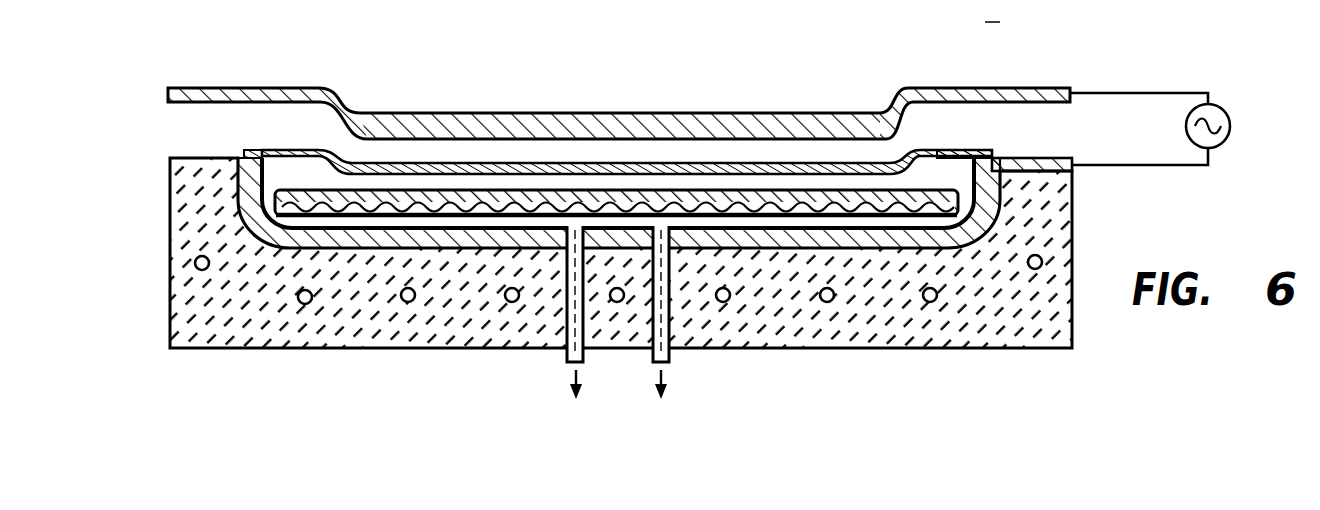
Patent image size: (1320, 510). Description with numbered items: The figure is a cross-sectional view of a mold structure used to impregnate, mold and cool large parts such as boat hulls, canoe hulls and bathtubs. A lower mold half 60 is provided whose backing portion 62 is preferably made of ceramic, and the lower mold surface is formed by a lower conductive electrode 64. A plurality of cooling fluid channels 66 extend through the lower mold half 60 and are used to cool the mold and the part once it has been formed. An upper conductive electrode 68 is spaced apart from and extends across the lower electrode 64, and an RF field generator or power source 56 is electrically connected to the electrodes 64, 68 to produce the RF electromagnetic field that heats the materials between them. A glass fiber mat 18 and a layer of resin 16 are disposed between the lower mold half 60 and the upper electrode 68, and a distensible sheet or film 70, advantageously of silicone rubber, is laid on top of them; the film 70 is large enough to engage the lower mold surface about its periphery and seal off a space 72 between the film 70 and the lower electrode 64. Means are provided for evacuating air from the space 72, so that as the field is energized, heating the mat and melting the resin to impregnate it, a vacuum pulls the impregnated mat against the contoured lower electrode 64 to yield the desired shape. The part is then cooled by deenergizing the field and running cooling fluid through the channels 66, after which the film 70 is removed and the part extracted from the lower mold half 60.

The layer of resin 16 is at (457, 190).
The glass fiber mat 18 is at (958, 172).
The RF field generator or power source 56 is at (1231, 123).
The lower mold half 60 is at (688, 239).
The backing portion 62 is at (170, 196).
The lower conductive electrode 64 is at (1023, 168).
The cooling fluid channels 66 is at (508, 302).
The upper conductive electrode 68 is at (749, 112).
The distensible sheet or film 70 is at (258, 150).
The space 72 is at (289, 155).